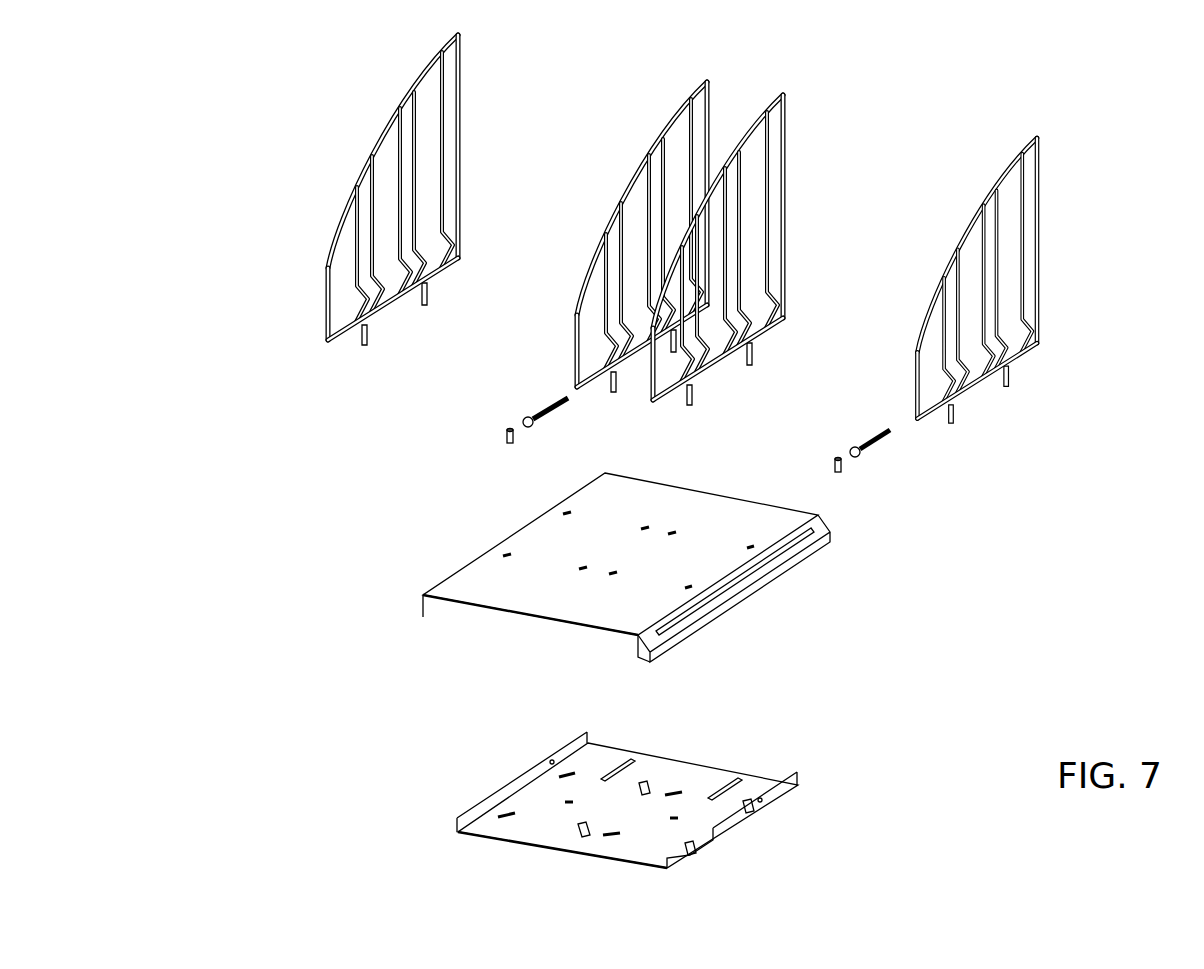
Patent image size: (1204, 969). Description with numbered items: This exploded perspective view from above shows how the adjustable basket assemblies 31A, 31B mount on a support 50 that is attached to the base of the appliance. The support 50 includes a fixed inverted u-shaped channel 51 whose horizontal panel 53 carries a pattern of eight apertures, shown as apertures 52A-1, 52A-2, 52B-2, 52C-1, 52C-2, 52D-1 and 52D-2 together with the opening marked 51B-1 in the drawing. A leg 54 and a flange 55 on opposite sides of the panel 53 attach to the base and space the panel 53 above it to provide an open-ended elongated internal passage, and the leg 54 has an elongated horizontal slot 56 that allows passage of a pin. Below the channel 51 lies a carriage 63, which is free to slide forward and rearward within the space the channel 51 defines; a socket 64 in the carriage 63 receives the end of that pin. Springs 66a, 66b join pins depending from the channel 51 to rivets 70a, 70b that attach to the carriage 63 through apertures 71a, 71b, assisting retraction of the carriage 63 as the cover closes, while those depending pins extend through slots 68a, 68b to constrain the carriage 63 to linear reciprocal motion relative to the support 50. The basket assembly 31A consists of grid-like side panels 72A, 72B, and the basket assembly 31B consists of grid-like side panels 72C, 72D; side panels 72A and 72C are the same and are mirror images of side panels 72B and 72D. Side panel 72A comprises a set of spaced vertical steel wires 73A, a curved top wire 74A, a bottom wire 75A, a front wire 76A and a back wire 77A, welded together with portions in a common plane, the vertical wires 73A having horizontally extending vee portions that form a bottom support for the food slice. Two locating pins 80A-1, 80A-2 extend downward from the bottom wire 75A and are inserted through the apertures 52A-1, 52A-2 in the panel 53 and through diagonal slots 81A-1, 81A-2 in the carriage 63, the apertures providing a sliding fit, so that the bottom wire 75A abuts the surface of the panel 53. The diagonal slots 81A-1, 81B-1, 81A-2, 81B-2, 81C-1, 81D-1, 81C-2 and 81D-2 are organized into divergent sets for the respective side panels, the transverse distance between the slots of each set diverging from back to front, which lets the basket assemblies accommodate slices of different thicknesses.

The basket assembly 31A is at (457, 24).
The basket assembly 31B is at (796, 92).
The support 50 is at (352, 877).
The inverted u-shaped channel 51 is at (650, 565).
The horizontal panel 53 is at (527, 585).
The leg 54 is at (434, 608).
The flange 55 is at (763, 577).
The elongated horizontal slot 56 is at (783, 547).
The aperture 52A-1 is at (507, 555).
The aperture 52A-2 is at (567, 513).
The aperture 52B-2 is at (645, 528).
The aperture 52C-1 is at (613, 573).
The aperture 52C-2 is at (672, 533).
The aperture 52D-1 is at (690, 587).
The aperture 52D-2 is at (750, 547).
The peg slot 51B-1 is at (583, 568).
The carriage 63 is at (605, 808).
The socket 64 is at (548, 762).
The slot 68a is at (610, 775).
The slot 68b is at (742, 777).
The aperture 71a is at (565, 802).
The aperture 71b is at (717, 820).
The diagonal slot 81A-1 is at (503, 817).
The diagonal slot 81A-2 is at (575, 768).
The diagonal slot 81B-1 is at (587, 837).
The diagonal slot 81B-2 is at (643, 783).
The diagonal slot 81C-1 is at (607, 840).
The diagonal slot 81C-2 is at (680, 788).
The diagonal slot 81D-1 is at (683, 857).
The diagonal slot 81D-2 is at (747, 810).
The side panel 72A is at (363, 208).
The side panel 72B is at (635, 117).
The side panel 72C is at (805, 172).
The side panel 72D is at (974, 164).
The vertical steel wires 73A is at (356, 318).
The curved top wire 74A is at (357, 176).
The bottom wire 75A is at (395, 298).
The front wire 76A is at (327, 277).
The back wire 77A is at (460, 151).
The locating pin 80A-1 is at (370, 340).
The locating pin 80A-2 is at (430, 293).
The spring 66a is at (548, 405).
The spring 66b is at (888, 440).
The rivet 70a is at (505, 428).
The rivet 70b is at (843, 470).